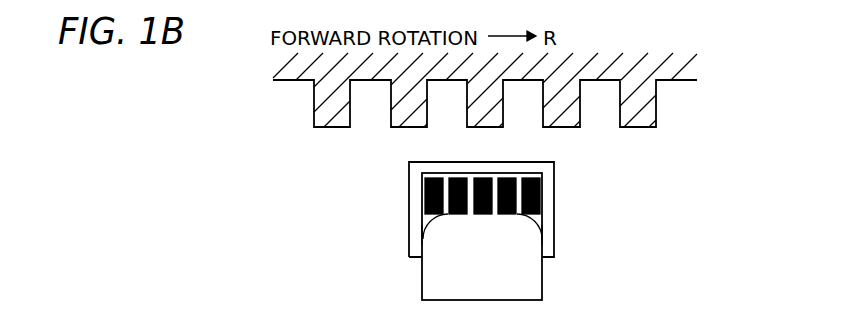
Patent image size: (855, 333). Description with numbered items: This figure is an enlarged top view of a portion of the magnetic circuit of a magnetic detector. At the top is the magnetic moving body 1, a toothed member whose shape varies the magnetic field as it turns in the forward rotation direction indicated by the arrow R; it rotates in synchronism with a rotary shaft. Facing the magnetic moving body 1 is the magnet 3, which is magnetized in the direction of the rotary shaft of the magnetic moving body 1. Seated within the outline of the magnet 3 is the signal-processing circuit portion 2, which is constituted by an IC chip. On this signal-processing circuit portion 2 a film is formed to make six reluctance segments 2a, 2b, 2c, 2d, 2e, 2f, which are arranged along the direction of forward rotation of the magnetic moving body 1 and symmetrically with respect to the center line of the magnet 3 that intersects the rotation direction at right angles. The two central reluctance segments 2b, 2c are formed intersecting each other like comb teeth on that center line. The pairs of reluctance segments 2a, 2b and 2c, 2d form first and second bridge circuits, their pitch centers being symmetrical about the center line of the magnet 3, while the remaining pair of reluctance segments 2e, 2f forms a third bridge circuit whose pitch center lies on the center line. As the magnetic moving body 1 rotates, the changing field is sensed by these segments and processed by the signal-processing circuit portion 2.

The magnetic moving body 1 is at (650, 97).
The signal-processing circuit portion 2 is at (523, 269).
The reluctance segment 2a is at (425, 192).
The reluctance segment 2b is at (458, 196).
The reluctance segment 2c is at (485, 213).
The reluctance segment 2d is at (538, 199).
The reluctance segment 2e is at (423, 235).
The reluctance segment 2f is at (540, 230).
The magnet 3 is at (555, 170).